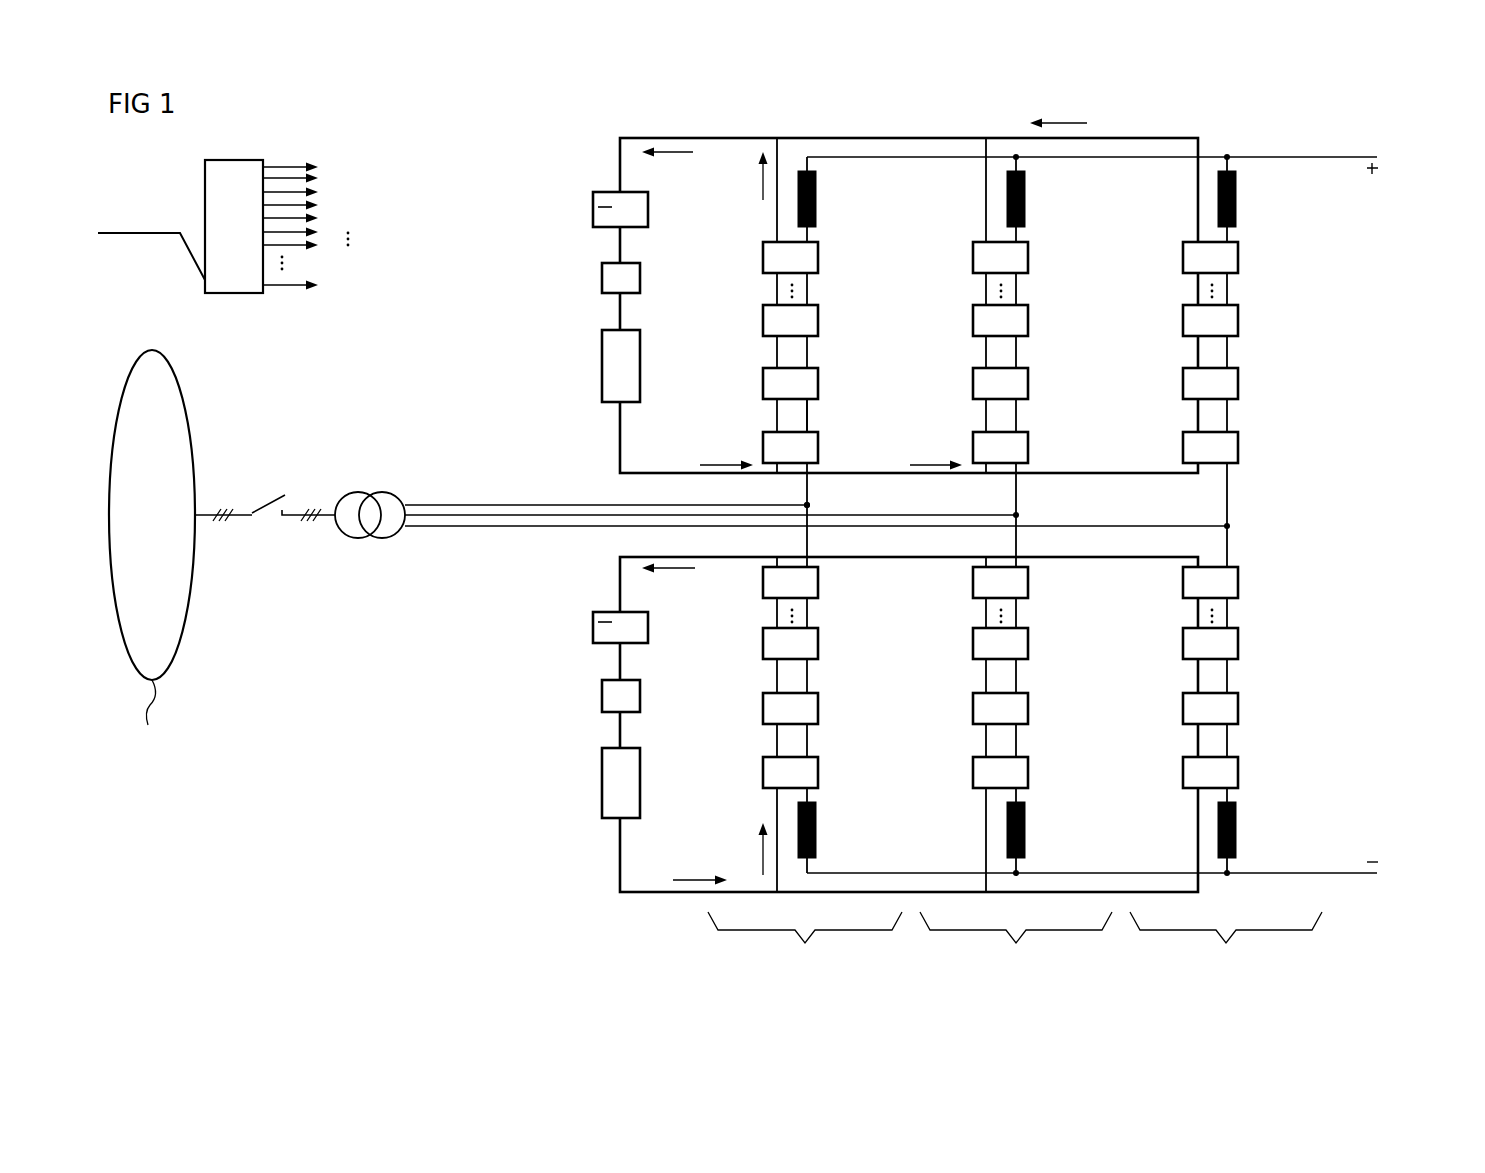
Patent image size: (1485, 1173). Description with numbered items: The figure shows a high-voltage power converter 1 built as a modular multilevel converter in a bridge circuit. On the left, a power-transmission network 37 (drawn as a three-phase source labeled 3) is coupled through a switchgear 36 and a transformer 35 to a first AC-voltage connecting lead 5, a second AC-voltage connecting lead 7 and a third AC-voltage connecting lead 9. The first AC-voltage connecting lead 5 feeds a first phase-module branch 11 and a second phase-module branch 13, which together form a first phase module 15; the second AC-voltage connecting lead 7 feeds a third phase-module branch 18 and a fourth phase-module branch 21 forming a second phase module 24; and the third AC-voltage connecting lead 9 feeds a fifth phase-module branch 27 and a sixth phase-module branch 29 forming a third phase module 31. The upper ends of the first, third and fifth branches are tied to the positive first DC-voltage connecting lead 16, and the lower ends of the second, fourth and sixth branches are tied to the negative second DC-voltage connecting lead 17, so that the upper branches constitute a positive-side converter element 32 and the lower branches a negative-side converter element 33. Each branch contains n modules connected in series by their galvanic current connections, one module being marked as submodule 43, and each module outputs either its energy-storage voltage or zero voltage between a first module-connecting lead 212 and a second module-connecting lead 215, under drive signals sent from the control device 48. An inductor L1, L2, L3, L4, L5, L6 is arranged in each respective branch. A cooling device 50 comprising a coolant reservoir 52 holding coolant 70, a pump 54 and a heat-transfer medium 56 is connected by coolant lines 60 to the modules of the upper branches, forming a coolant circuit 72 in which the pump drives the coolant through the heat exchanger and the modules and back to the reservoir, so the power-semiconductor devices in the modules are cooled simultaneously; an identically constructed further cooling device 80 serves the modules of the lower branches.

The power converter 1 is at (1426, 138).
The AC voltage source 3 is at (152, 515).
The first AC-voltage connecting lead 5 is at (418, 505).
The second AC-voltage connecting lead 7 is at (450, 515).
The third AC-voltage connecting lead 9 is at (483, 526).
The first phase-module branch 11 is at (808, 330).
The second phase-module branch 13 is at (807, 685).
The first phase module 15 is at (805, 947).
The first DC-voltage connecting lead 16 is at (1333, 156).
The second DC-voltage connecting lead 17 is at (1350, 878).
The third phase-module branch 18 is at (1017, 316).
The fourth phase-module branch 21 is at (1016, 718).
The second phase module 24 is at (1016, 947).
The fifth phase-module branch 27 is at (1224, 316).
The sixth phase-module branch 29 is at (1226, 718).
The third phase module 31 is at (1226, 947).
The positive-side converter element 32 is at (1372, 324).
The negative-side converter element 33 is at (1372, 698).
The transformer 35 is at (357, 492).
The switchgear 36 is at (264, 504).
The power-transmission network 37 is at (151, 720).
The submodule 43 is at (1183, 264).
The control device 48 is at (233, 293).
The cooling device 50 is at (577, 313).
The coolant reservoir 52 is at (593, 217).
The pump 54 is at (602, 285).
The heat-transfer medium 56 is at (602, 373).
The coolant lines 60 is at (620, 164).
The coolant 70 is at (598, 207).
The coolant circuit 72 is at (688, 880).
The further cooling device 80 is at (598, 622).
The first module-connecting lead 212 is at (819, 412).
The second module-connecting lead 215 is at (808, 476).
The inductor L1 is at (816, 201).
The inductor L2 is at (816, 831).
The inductor L3 is at (1025, 199).
The inductor L4 is at (1025, 831).
The inductor L5 is at (1236, 199).
The inductor L6 is at (1236, 831).